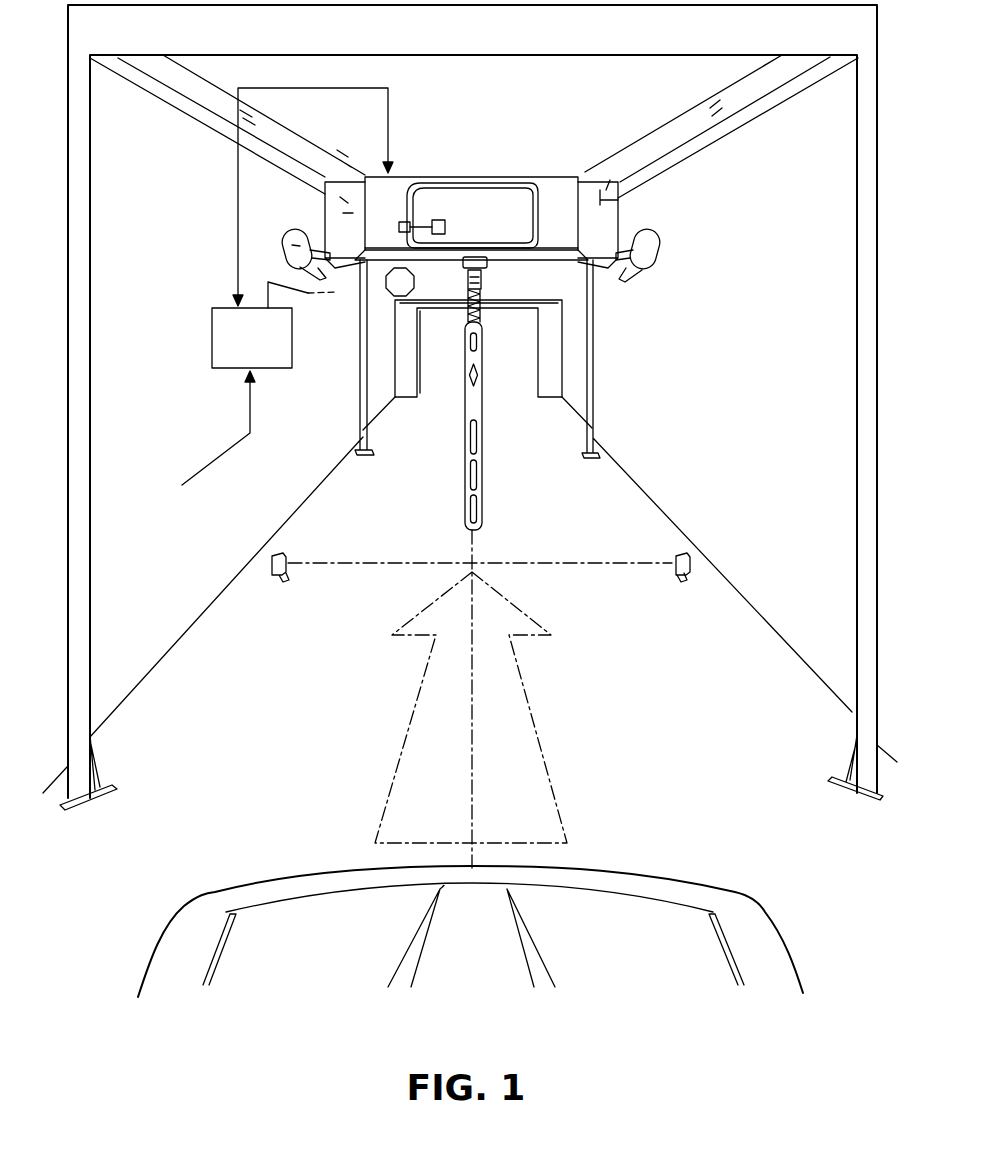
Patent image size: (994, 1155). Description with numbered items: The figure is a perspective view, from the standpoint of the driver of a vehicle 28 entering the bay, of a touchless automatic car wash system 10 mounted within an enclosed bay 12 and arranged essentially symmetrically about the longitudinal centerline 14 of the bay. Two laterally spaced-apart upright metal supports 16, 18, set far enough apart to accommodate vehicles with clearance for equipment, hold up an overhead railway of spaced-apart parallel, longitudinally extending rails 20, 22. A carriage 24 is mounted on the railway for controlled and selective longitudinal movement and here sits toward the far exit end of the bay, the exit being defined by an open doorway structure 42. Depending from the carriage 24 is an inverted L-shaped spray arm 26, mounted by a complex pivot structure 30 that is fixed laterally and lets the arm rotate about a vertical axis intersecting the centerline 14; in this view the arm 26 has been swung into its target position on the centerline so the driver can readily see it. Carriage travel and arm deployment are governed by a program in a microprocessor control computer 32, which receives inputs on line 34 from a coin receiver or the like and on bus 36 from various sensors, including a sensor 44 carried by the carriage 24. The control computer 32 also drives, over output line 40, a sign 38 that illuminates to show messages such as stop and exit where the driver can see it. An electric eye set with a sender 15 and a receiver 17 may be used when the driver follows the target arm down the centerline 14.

The car wash system 10 is at (471, 181).
The enclosed bay 12 is at (402, 430).
The longitudinal centerline 14 is at (465, 548).
The sender 15 is at (274, 563).
The upright metal support 16 is at (360, 405).
The receiver 17 is at (690, 560).
The upright metal support 18 is at (593, 400).
The rail 20 is at (290, 158).
The rail 22 is at (665, 170).
The carriage 24 is at (530, 180).
The spray arm 26 is at (483, 467).
The vehicle 28 is at (303, 881).
The pivot structure 30 is at (486, 274).
The control computer 32 is at (213, 374).
The line 34 is at (252, 420).
The bus 36 is at (237, 247).
The sign 38 is at (415, 290).
The output line 40 is at (333, 294).
The open doorway structure 42 is at (418, 372).
The sensor 44 is at (422, 192).